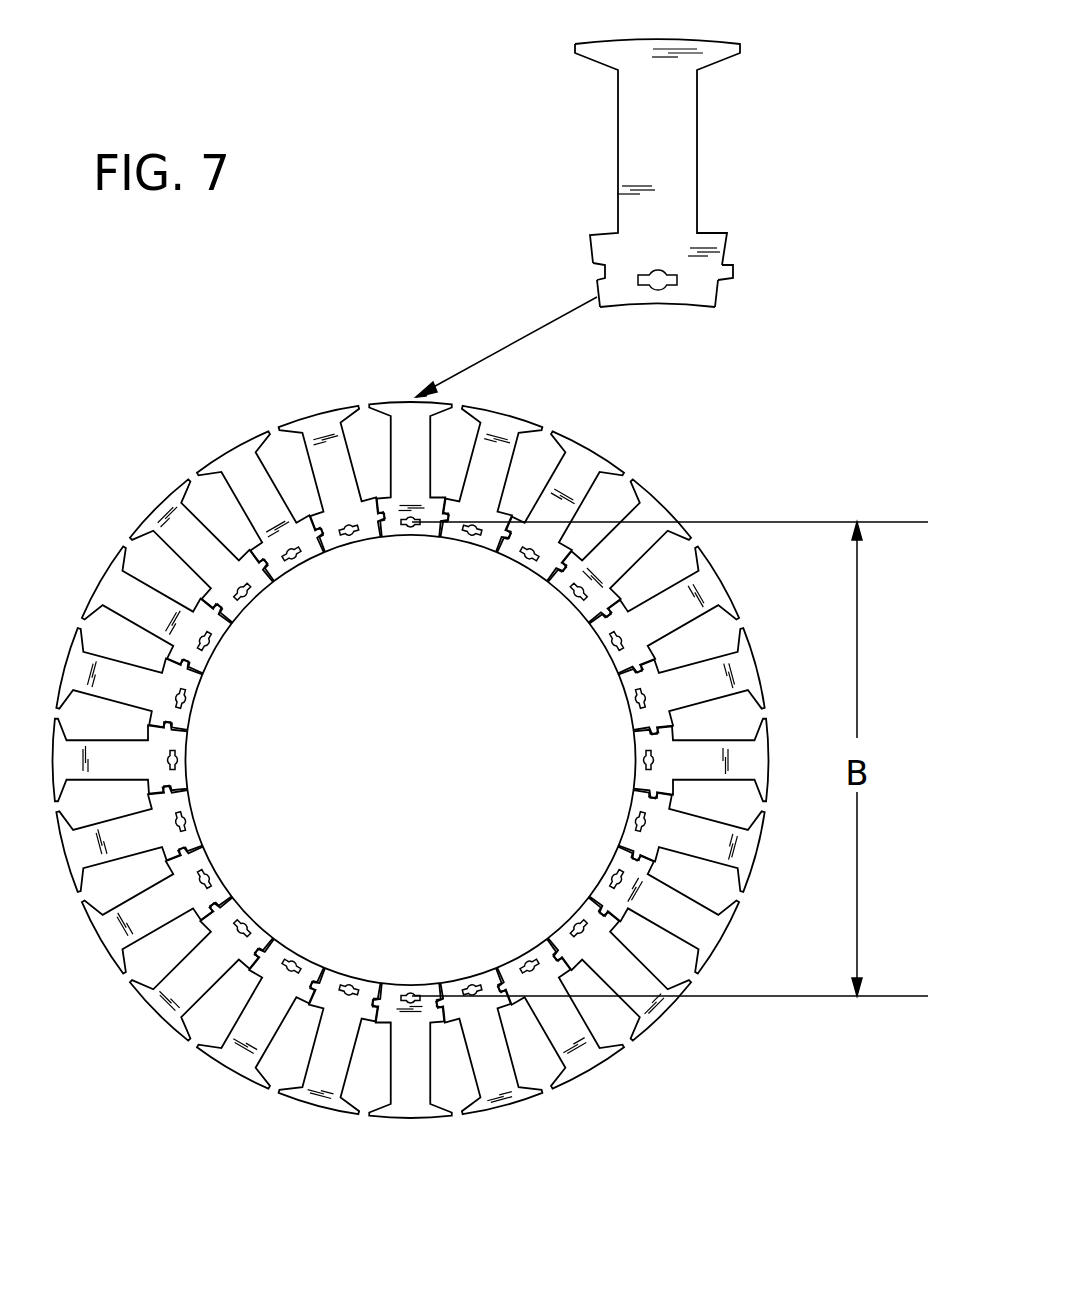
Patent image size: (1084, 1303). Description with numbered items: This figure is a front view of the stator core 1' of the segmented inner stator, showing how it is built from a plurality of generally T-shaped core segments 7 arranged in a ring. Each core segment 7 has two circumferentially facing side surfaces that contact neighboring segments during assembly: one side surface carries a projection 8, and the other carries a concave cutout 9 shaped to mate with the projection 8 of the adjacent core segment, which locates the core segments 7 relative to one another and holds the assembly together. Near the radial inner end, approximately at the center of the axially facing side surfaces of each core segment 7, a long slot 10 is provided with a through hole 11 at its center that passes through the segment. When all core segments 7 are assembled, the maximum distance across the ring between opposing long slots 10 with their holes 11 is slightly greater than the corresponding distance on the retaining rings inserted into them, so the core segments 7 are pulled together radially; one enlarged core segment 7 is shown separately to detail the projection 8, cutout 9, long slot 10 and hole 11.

The stator core 1' is at (411, 742).
The core segment 7 is at (649, 214).
The projection 8 is at (735, 273).
The concave cutout 9 is at (605, 268).
The long slot 10 is at (678, 282).
The through hole 11 is at (658, 273).